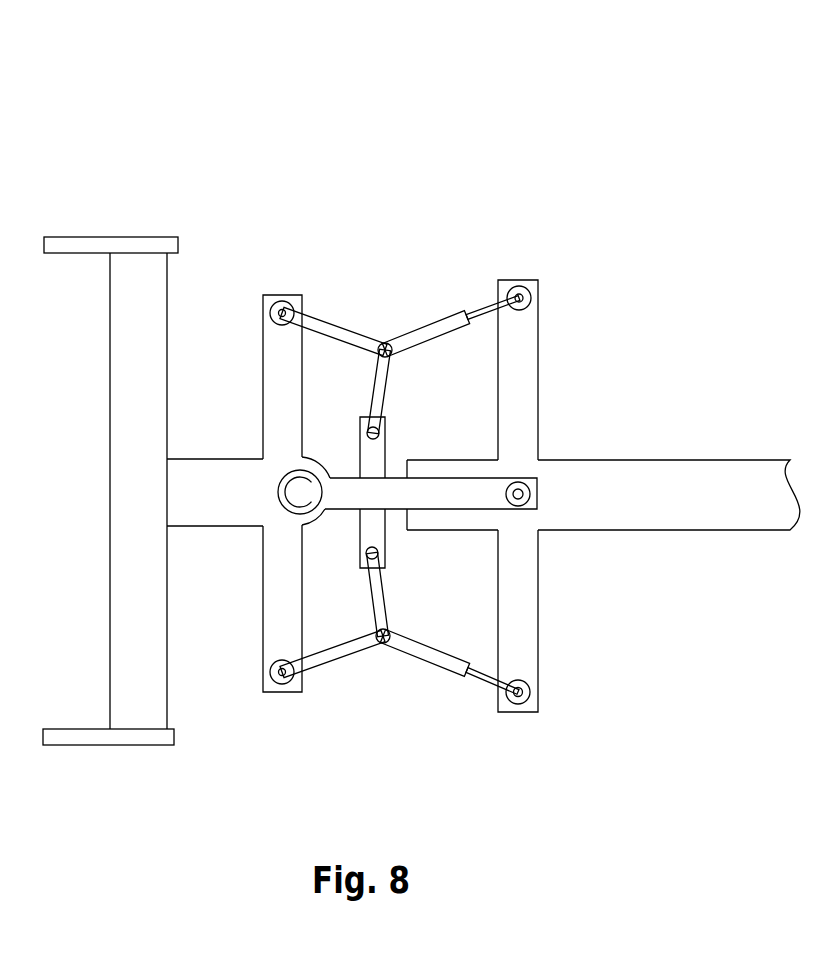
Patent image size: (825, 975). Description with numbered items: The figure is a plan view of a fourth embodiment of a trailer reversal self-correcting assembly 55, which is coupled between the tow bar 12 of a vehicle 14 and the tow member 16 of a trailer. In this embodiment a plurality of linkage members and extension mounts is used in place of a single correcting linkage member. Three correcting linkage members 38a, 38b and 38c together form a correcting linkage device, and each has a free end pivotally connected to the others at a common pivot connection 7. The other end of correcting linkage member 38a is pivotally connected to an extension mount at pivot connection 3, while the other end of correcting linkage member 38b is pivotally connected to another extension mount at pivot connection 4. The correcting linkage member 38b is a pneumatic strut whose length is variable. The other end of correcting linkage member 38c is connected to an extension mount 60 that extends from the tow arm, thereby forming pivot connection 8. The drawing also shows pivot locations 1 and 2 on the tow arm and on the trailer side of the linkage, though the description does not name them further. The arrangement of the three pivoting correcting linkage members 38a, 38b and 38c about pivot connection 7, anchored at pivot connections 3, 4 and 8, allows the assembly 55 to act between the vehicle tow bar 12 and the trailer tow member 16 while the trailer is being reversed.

The trailer reversal self-correcting assembly 55 is at (350, 148).
The pivot connection 3 is at (265, 300).
The correcting linkage member 38a is at (330, 333).
The correcting linkage member 38b is at (438, 330).
The pivot connection 4 is at (520, 290).
The pivot connection 7 is at (386, 345).
The correcting linkage member 38c is at (392, 368).
The pivot connection 8 is at (365, 433).
The extension mount 60 is at (377, 472).
The boss / bearing 1 is at (300, 492).
The pivot 2 is at (530, 494).
The tow bar 12 is at (213, 512).
The tow member 16 is at (715, 505).
The vehicle 14 is at (135, 720).